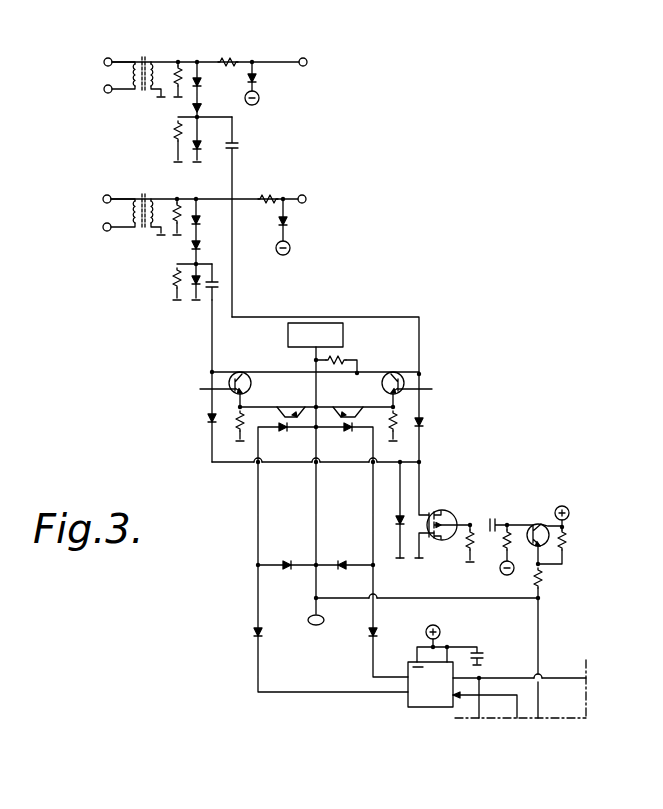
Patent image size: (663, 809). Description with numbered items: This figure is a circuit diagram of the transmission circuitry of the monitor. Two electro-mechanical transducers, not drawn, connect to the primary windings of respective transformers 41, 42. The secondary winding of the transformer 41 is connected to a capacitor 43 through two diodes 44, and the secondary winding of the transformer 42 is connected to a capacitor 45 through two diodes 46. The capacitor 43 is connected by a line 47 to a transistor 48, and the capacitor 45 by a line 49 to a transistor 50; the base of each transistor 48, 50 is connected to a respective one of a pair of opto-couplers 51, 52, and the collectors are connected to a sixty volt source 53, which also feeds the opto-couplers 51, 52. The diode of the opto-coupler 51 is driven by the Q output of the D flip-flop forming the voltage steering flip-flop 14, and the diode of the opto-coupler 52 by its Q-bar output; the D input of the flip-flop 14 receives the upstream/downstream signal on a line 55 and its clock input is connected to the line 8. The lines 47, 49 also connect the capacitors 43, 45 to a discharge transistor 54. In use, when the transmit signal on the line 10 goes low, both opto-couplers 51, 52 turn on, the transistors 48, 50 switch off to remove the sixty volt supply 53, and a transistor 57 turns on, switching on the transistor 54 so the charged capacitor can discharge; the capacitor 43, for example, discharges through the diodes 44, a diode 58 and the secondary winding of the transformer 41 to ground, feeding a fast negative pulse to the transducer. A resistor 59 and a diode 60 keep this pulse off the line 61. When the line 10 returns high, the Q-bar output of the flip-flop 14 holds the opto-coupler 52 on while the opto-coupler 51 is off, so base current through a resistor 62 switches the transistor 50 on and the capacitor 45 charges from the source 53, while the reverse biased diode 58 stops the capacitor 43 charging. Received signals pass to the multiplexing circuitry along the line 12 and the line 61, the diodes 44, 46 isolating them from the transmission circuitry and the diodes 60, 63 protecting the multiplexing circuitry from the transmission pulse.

The transformer 41 is at (143, 57).
The resistor 59 is at (229, 58).
The line 61 is at (279, 58).
The diodes 44 is at (202, 107).
The diode 60 is at (257, 78).
The capacitor 43 is at (238, 146).
The line 12 is at (285, 197).
The diode 63 is at (288, 221).
The transformer 42 is at (143, 232).
The diodes 46 is at (201, 221).
The capacitor 45 is at (210, 295).
The line 47 is at (403, 318).
The line 49 is at (212, 345).
The 60 volt source 53 is at (288, 336).
The transistor 50 is at (212, 386).
The transistor 48 is at (416, 386).
The resistor 62 is at (237, 444).
The diode 58 is at (424, 422).
The opto-coupler 51 is at (280, 418).
The opto-coupler 52 is at (352, 418).
The discharge transistor 54 is at (452, 516).
The transistor 57 is at (533, 523).
The line 10 is at (540, 624).
The voltage steering flip-flop 14 is at (420, 712).
The line 55 is at (570, 678).
The line 8 is at (517, 714).